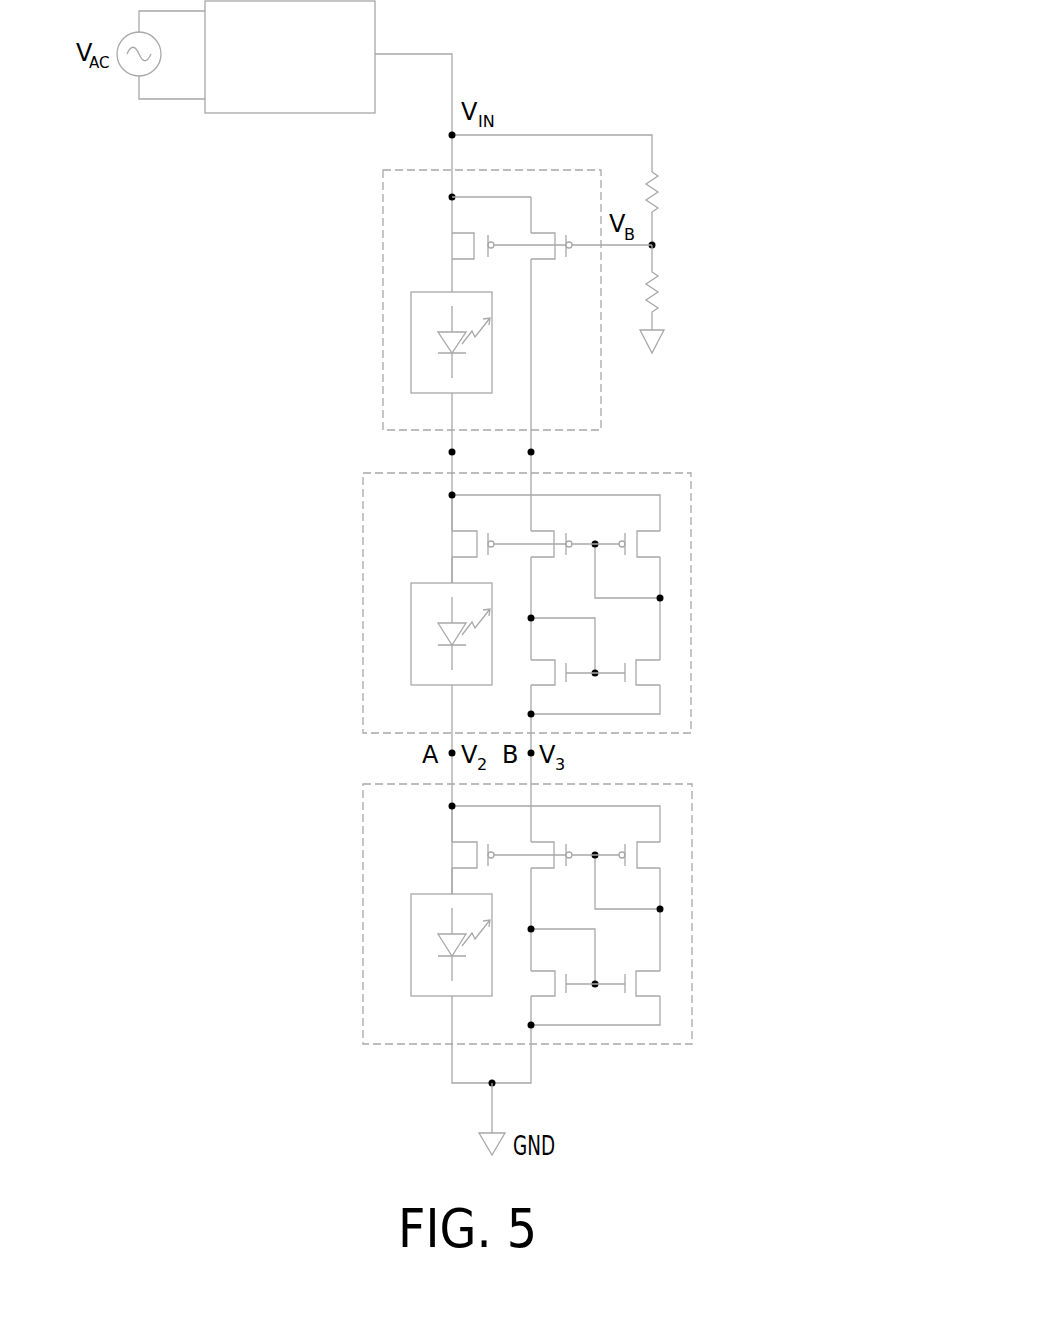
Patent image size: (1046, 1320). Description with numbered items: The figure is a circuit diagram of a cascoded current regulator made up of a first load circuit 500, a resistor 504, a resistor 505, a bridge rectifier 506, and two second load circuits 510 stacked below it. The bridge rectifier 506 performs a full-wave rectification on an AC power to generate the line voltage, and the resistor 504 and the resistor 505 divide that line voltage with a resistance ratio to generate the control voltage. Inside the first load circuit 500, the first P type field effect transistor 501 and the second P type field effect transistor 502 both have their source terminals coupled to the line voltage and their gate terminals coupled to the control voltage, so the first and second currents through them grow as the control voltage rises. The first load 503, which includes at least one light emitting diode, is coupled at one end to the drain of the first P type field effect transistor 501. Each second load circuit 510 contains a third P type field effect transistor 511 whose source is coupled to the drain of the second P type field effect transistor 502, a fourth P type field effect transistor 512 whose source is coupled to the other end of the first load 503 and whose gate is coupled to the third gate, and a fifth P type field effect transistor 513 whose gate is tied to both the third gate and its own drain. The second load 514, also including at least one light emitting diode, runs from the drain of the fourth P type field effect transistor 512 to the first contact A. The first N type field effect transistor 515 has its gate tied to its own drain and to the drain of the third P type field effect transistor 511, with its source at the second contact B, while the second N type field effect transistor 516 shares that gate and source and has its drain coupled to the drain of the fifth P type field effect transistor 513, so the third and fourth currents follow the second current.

The first load circuit 500 is at (511, 300).
The first P type field effect transistor 501 is at (455, 242).
The second P type field effect transistor 502 is at (555, 259).
The first load 503 is at (411, 337).
The resistor 504 is at (655, 200).
The resistor 505 is at (655, 300).
The bridge rectifier 506 is at (251, 113).
The second load circuit 510 is at (556, 758).
The third P type field effect transistor 511 is at (553, 525).
The fourth P type field effect transistor 512 is at (455, 542).
The fifth P type field effect transistor 513 is at (655, 543).
The second load 514 is at (411, 635).
The first N type field effect transistor 515 is at (530, 670).
The second N type field effect transistor 516 is at (653, 673).